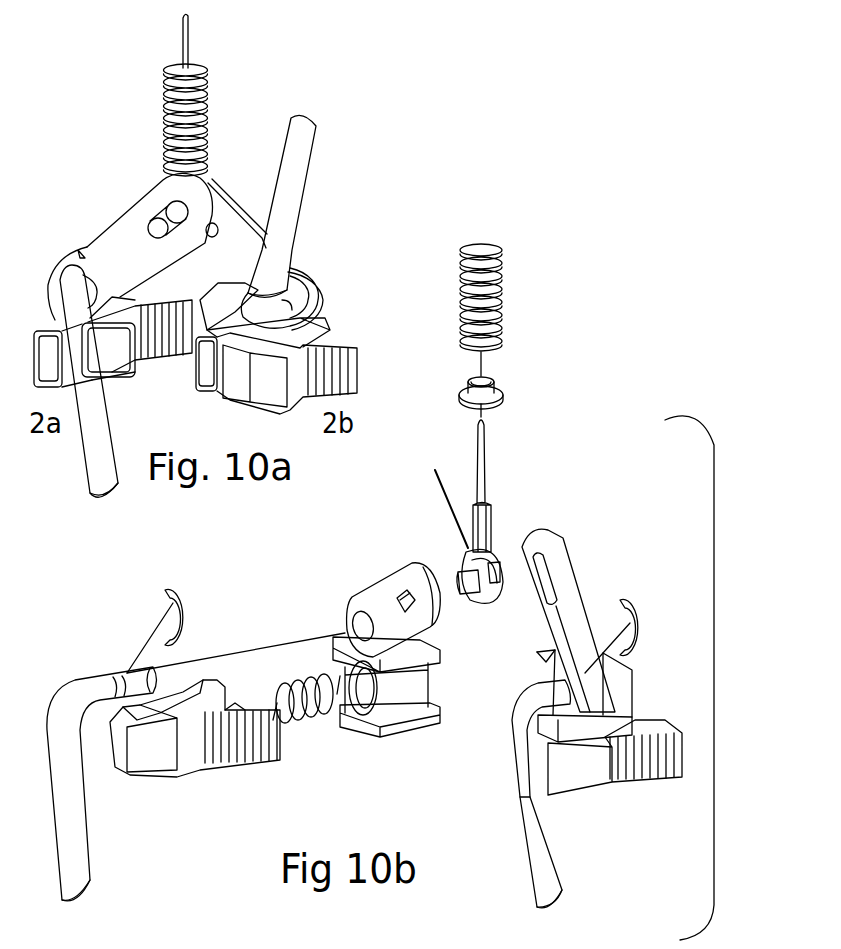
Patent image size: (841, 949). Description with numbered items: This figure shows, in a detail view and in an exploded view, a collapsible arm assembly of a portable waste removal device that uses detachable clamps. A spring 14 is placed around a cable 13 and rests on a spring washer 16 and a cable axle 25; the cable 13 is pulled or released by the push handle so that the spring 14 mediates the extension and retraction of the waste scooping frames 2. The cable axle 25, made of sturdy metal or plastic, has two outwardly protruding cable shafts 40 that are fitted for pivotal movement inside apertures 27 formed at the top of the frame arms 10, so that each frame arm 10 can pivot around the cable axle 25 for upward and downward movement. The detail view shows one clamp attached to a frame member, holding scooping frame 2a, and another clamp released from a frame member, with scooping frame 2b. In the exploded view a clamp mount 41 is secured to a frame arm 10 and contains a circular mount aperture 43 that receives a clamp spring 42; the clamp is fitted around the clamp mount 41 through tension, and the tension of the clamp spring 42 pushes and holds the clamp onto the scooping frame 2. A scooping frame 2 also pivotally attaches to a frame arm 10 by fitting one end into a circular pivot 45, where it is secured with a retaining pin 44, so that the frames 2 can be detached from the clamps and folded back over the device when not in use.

In FIG. 10A, the scooping frame 2 is at (315, 188).
In FIG. 10B, the scooping frame 2 is at (87, 798).
In FIG. 10A, the scooping frame 2a is at (113, 381).
In FIG. 10A, the scooping frame 2b is at (276, 348).
In FIG. 10A, the frame arm 10 is at (135, 198).
In FIG. 10B, the frame arm 10 is at (388, 568).
In FIG. 10A, the cable 13 is at (195, 37).
In FIG. 10B, the cable 13 is at (487, 466).
In FIG. 10A, the spring 14 is at (158, 122).
In FIG. 10B, the spring 14 is at (512, 322).
In FIG. 10B, the spring washer 16 is at (503, 383).
In FIG. 10B, the cable axle 25 is at (439, 496).
In FIG. 10B, the aperture 27 is at (527, 577).
In FIG. 10B, the cable shaft 40 is at (462, 570).
In FIG. 10B, the clamp mount 41 is at (420, 735).
In FIG. 10B, the clamp spring 42 is at (320, 727).
In FIG. 10B, the mount aperture 43 is at (350, 677).
In FIG. 10B, the retaining pin 44 is at (158, 597).
In FIG. 10B, the pivot 45 is at (360, 625).